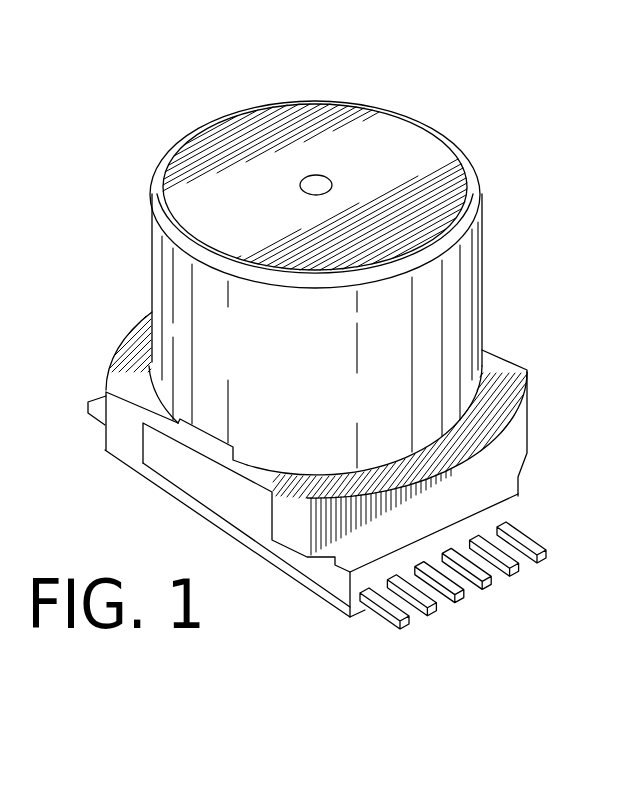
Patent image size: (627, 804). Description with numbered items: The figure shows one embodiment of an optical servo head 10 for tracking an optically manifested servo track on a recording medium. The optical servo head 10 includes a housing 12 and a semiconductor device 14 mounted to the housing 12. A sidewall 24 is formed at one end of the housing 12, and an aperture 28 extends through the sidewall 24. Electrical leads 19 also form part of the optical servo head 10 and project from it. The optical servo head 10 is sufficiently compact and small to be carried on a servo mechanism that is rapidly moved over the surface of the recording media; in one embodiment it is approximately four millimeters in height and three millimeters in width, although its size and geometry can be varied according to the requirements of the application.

The optical servo head 10 is at (492, 136).
The housing 12 is at (453, 307).
The semiconductor device 14 is at (321, 578).
The electrical leads 19 is at (531, 539).
The sidewall 24 is at (375, 145).
The aperture 28 is at (313, 178).